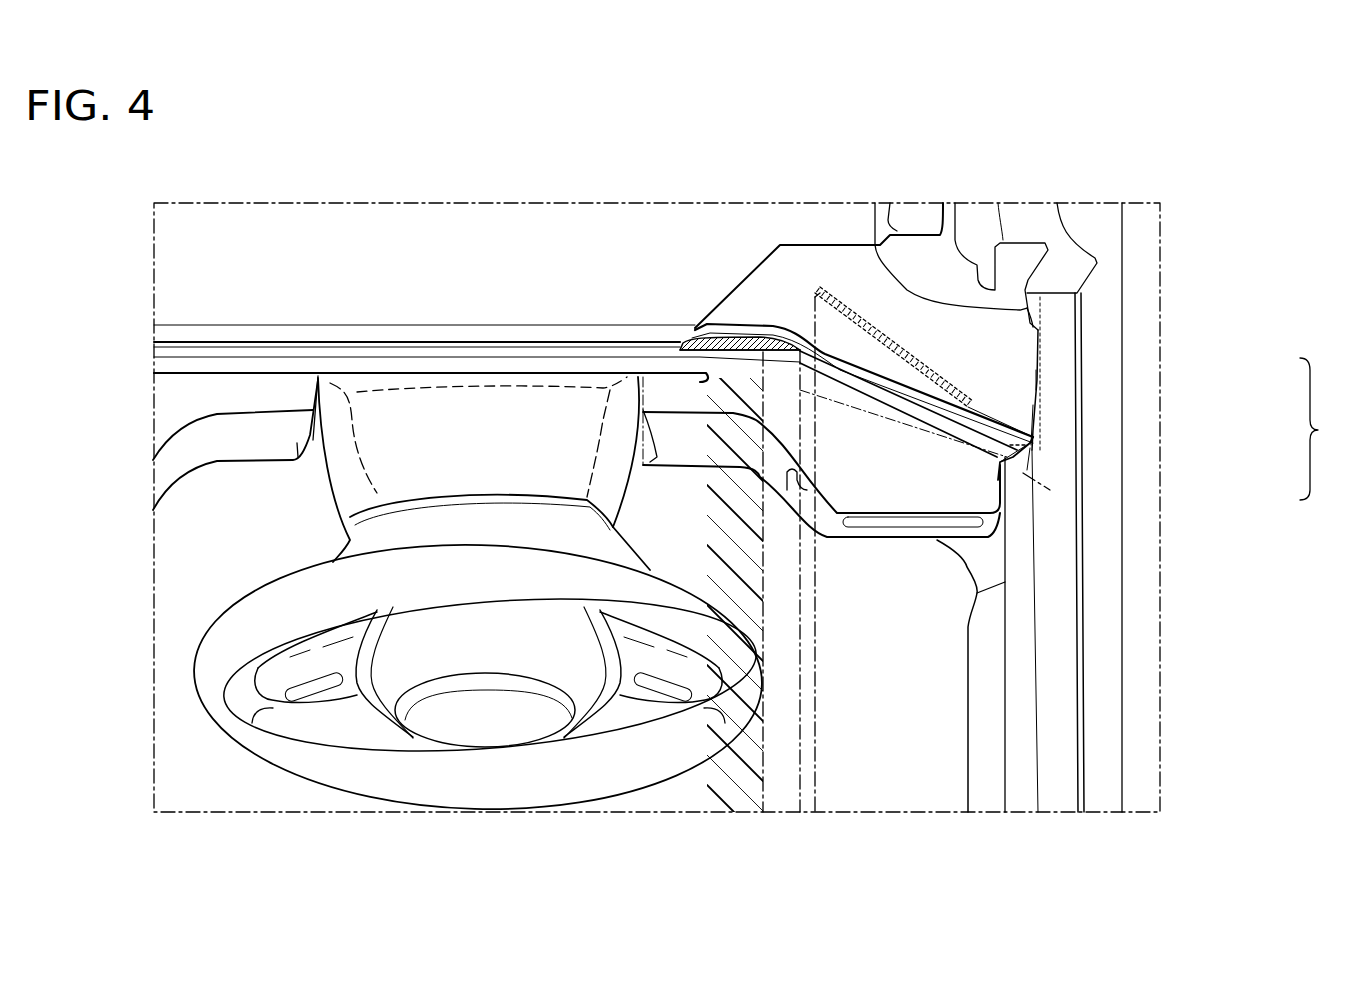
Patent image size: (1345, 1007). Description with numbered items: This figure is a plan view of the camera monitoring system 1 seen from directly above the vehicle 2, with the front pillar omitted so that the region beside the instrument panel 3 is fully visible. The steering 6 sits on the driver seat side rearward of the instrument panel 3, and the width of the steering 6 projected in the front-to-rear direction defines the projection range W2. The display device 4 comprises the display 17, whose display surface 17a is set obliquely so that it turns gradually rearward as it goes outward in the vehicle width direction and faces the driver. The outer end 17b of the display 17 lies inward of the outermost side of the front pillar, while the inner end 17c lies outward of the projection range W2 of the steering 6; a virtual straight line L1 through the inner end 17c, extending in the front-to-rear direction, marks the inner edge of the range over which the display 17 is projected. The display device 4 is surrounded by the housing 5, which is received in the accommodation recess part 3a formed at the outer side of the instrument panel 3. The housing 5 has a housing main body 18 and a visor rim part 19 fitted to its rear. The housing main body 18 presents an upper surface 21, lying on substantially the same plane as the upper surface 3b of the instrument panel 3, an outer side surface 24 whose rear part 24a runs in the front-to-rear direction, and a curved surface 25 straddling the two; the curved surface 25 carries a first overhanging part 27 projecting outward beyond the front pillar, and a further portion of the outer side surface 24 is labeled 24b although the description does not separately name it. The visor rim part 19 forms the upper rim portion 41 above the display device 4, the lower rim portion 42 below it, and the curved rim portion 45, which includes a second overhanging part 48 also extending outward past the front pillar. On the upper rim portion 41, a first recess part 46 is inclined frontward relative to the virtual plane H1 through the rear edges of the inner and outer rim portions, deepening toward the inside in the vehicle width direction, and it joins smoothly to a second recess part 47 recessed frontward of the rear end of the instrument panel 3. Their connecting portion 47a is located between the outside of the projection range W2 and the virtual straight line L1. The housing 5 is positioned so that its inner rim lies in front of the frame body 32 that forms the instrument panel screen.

The camera monitoring system 1 is at (785, 238).
The vehicle 2 is at (1170, 258).
The instrument panel 3 is at (476, 407).
The accommodation recess part 3a is at (767, 258).
The upper surface of the instrument panel 3b is at (439, 282).
The display device 4 is at (834, 284).
The housing 5 is at (1320, 429).
The steering 6 is at (468, 795).
The display 17 is at (924, 295).
The display surface 17a is at (875, 350).
The outer end of the display 17b is at (1030, 441).
The inner end of the display 17c is at (818, 292).
The housing main body 18 is at (1046, 380).
The visor rim part 19 is at (1012, 460).
The upper surface of the housing main body 21 is at (730, 330).
The outer side surface 24 is at (1032, 358).
The rear part of the outer side surface 24a is at (1161, 386).
The cowl reinforcement upper wall 24b is at (1030, 327).
The curved surface 25 is at (1151, 420).
The first overhanging part 27 is at (1028, 403).
The frame body 32 is at (480, 375).
The upper rim portion 41 is at (947, 415).
The lower rim portion 42 is at (843, 377).
The curved rim portion 45 is at (1135, 509).
The first recess part 46 is at (907, 410).
The second recess part 47 is at (683, 345).
The connecting portion 47a is at (798, 350).
The second overhanging part 48 is at (1028, 456).
The virtual plane H1 is at (1050, 490).
The virtual straight line L1 is at (820, 726).
The projection range of the steering W2 is at (735, 522).